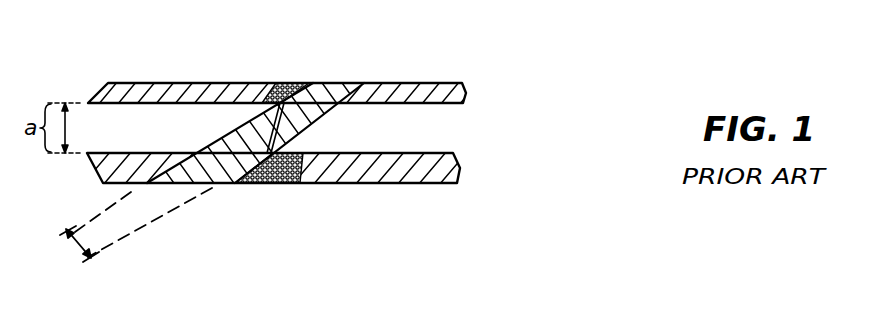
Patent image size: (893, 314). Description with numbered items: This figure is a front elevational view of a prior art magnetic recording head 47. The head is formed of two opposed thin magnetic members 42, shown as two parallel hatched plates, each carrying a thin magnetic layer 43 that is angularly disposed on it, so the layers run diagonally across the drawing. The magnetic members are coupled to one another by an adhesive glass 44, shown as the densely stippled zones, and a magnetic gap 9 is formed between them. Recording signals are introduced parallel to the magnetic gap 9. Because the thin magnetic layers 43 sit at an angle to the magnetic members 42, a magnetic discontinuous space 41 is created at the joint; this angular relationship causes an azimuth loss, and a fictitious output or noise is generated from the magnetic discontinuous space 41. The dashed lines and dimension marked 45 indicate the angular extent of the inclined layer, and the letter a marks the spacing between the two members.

The magnetic gap 9 is at (283, 125).
The magnetic discontinuous space 41 is at (268, 148).
The magnetic member 42 is at (167, 83).
The thin magnetic layer 43 is at (354, 83).
The adhesive glass 44 is at (287, 83).
The laser beam 45 is at (78, 251).
The magnetic recording head 47 is at (492, 72).